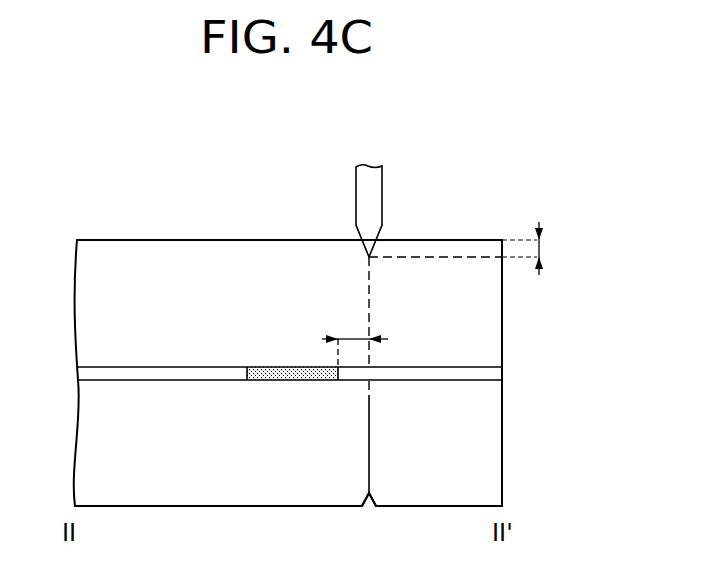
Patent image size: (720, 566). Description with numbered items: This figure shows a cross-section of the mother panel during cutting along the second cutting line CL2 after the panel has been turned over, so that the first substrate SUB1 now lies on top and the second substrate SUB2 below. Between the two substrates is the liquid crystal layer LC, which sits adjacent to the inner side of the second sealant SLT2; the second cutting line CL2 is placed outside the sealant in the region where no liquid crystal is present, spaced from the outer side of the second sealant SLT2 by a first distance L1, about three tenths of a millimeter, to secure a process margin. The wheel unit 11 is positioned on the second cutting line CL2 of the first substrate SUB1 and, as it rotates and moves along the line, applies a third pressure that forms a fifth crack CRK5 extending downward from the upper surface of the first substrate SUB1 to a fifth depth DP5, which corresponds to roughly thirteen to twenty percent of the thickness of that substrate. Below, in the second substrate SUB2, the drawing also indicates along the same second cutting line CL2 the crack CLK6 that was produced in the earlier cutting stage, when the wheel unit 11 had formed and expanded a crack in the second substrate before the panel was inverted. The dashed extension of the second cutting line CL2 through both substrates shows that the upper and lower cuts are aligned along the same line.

The wheel unit 11 is at (372, 197).
The first substrate SUB1 is at (488, 308).
The second substrate SUB2 is at (488, 441).
The liquid crystal layer LC is at (92, 373).
The second sealant SLT2 is at (256, 367).
The fifth crack CRK5 is at (360, 246).
The second cutting line CL2 is at (367, 280).
The sixth crack CLK6 is at (368, 445).
The first distance L1 is at (357, 338).
The fifth depth DP5 is at (543, 248).